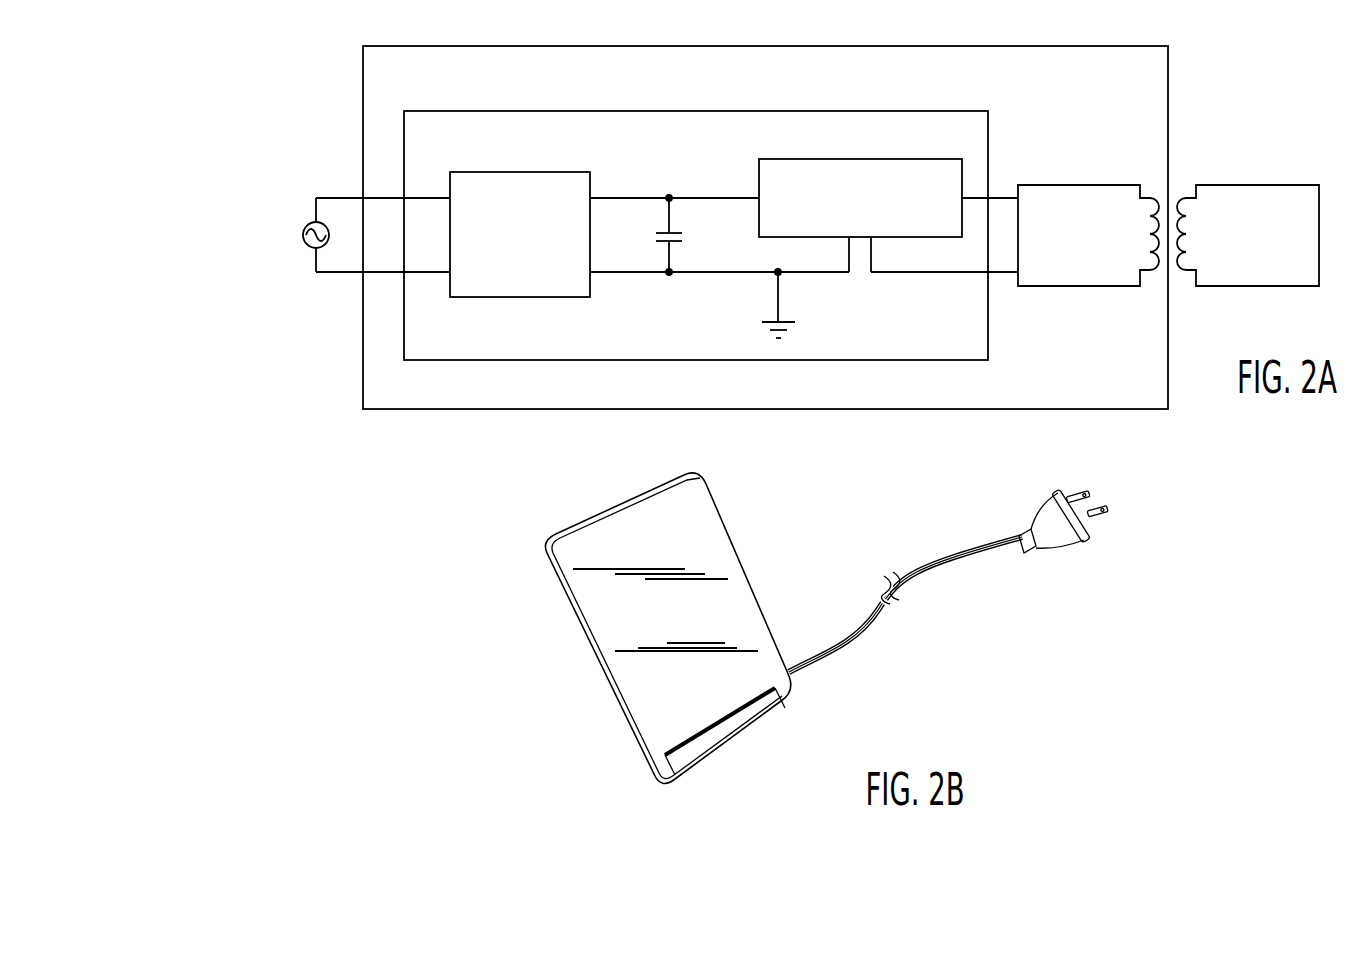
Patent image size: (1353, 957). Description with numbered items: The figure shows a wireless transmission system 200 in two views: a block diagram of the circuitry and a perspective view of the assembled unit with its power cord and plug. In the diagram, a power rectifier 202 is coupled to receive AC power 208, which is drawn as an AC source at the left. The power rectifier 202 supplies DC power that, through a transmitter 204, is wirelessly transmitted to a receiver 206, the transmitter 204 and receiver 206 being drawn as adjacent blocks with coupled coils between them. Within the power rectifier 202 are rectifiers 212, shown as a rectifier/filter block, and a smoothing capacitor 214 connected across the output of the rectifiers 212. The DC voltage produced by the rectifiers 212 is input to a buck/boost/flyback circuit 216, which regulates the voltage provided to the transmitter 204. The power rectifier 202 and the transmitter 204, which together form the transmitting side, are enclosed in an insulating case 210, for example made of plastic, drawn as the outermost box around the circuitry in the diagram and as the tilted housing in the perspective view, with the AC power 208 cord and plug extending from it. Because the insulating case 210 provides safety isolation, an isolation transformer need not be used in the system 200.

In FIG. 2A, the system 200 is at (276, 84).
In FIG. 2A, the power rectifier 202 is at (435, 149).
In FIG. 2A, the transmitter 204 is at (1093, 277).
In FIG. 2A, the receiver 206 is at (1270, 277).
In FIG. 2A, the AC power 208 is at (269, 238).
In FIG. 2B, the AC power 208 is at (1057, 537).
In FIG. 2A, the insulating case 210 is at (390, 83).
In FIG. 2B, the insulating case 210 is at (628, 680).
In FIG. 2A, the rectifiers 212 is at (533, 286).
In FIG. 2A, the smoothing capacitor 214 is at (687, 238).
In FIG. 2A, the buck/boost/flyback circuit 216 is at (915, 231).